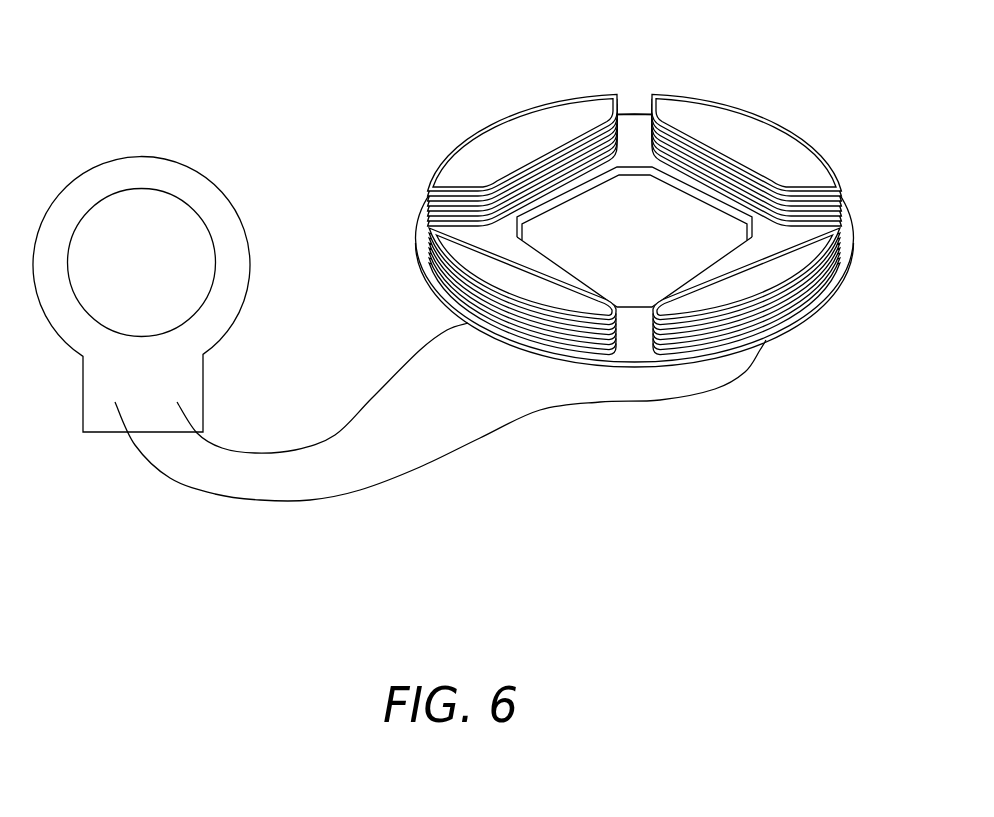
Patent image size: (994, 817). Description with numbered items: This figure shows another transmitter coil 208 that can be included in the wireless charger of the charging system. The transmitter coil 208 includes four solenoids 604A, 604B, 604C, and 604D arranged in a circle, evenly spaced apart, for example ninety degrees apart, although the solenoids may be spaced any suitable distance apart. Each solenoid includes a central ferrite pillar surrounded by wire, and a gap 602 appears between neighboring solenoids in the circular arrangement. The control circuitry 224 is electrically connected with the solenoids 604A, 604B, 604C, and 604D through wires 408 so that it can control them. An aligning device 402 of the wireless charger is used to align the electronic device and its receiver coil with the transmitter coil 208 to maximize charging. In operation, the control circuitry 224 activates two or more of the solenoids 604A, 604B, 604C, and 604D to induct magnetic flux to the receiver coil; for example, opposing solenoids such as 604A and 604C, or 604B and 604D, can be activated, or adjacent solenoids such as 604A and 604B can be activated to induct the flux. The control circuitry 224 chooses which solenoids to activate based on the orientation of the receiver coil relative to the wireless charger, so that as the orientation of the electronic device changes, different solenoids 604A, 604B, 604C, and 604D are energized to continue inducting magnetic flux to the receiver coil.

The transmitter coil 208 is at (828, 100).
The control circuitry 224 is at (137, 170).
The aligning device 402 is at (172, 243).
The wires 408 is at (247, 452).
The gap 602 is at (636, 126).
The first solenoid 604A is at (810, 165).
The second solenoid 604B is at (772, 273).
The third solenoid 604C is at (465, 243).
The fourth solenoid 604D is at (512, 133).